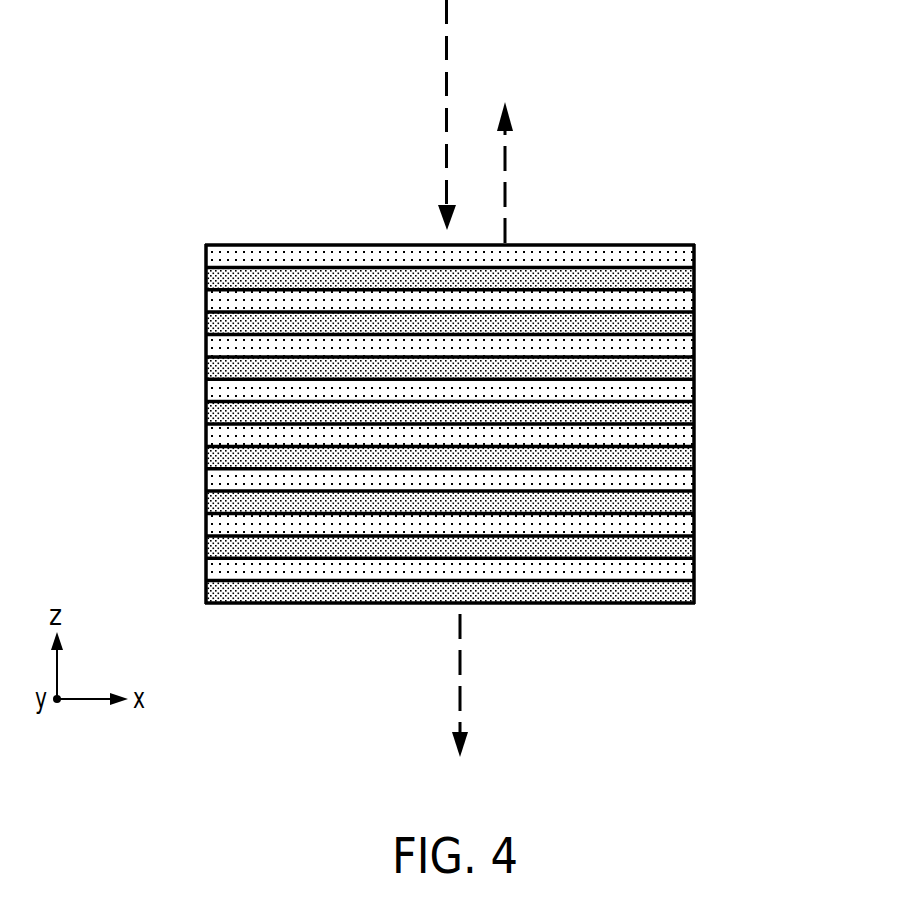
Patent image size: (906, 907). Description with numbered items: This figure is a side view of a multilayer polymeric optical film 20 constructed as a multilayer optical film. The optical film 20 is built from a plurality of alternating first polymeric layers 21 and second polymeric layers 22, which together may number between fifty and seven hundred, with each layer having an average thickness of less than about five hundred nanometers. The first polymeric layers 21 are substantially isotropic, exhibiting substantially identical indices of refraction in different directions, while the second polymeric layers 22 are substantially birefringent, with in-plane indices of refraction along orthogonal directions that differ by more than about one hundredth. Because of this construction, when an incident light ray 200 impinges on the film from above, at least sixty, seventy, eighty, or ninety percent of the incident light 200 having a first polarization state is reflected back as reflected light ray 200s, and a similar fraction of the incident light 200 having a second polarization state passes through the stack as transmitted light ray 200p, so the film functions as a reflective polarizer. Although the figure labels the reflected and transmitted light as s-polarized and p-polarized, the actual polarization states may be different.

The multilayer polymeric optical film 20 is at (430, 339).
The first polymeric layers 21 is at (695, 255).
The second polymeric layers 22 is at (695, 278).
The incident light ray 200 is at (424, 115).
The reflected light ray 200s is at (534, 172).
The transmitted light ray 200p is at (490, 685).